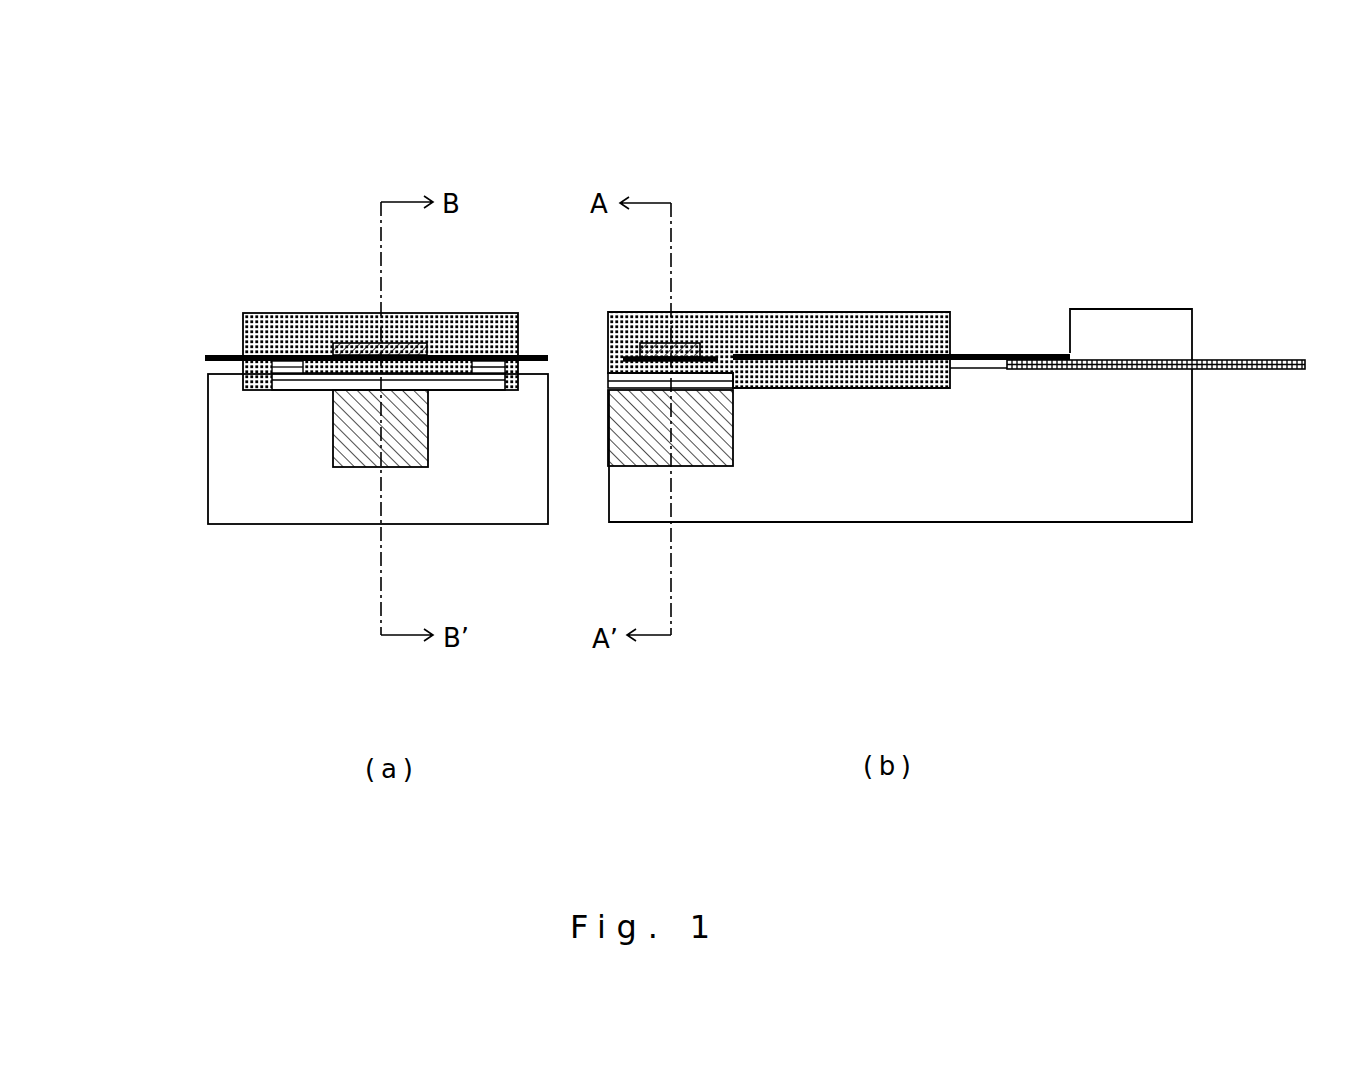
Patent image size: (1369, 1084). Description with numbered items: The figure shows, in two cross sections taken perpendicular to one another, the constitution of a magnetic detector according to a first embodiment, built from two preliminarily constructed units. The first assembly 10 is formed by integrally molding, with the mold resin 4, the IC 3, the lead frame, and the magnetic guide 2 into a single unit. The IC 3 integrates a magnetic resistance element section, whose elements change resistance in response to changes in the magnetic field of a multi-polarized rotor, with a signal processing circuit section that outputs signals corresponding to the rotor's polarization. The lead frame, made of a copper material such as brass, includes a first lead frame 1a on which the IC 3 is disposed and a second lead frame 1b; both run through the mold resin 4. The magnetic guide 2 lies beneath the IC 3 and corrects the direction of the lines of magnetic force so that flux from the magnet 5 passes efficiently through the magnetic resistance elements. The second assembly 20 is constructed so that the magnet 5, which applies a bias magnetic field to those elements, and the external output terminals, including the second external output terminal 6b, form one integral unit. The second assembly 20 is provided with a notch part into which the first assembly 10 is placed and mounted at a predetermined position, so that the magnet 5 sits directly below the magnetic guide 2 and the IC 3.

The first assembly 10 is at (340, 313).
The mold resin 4 is at (260, 318).
The first lead frame 1a is at (227, 353).
The second lead frame 1b is at (985, 352).
The IC 3 is at (420, 343).
The magnetic guide 2 is at (607, 380).
The magnet 5 is at (363, 457).
The second assembly 20 is at (262, 525).
The second external output terminal 6b is at (1250, 370).